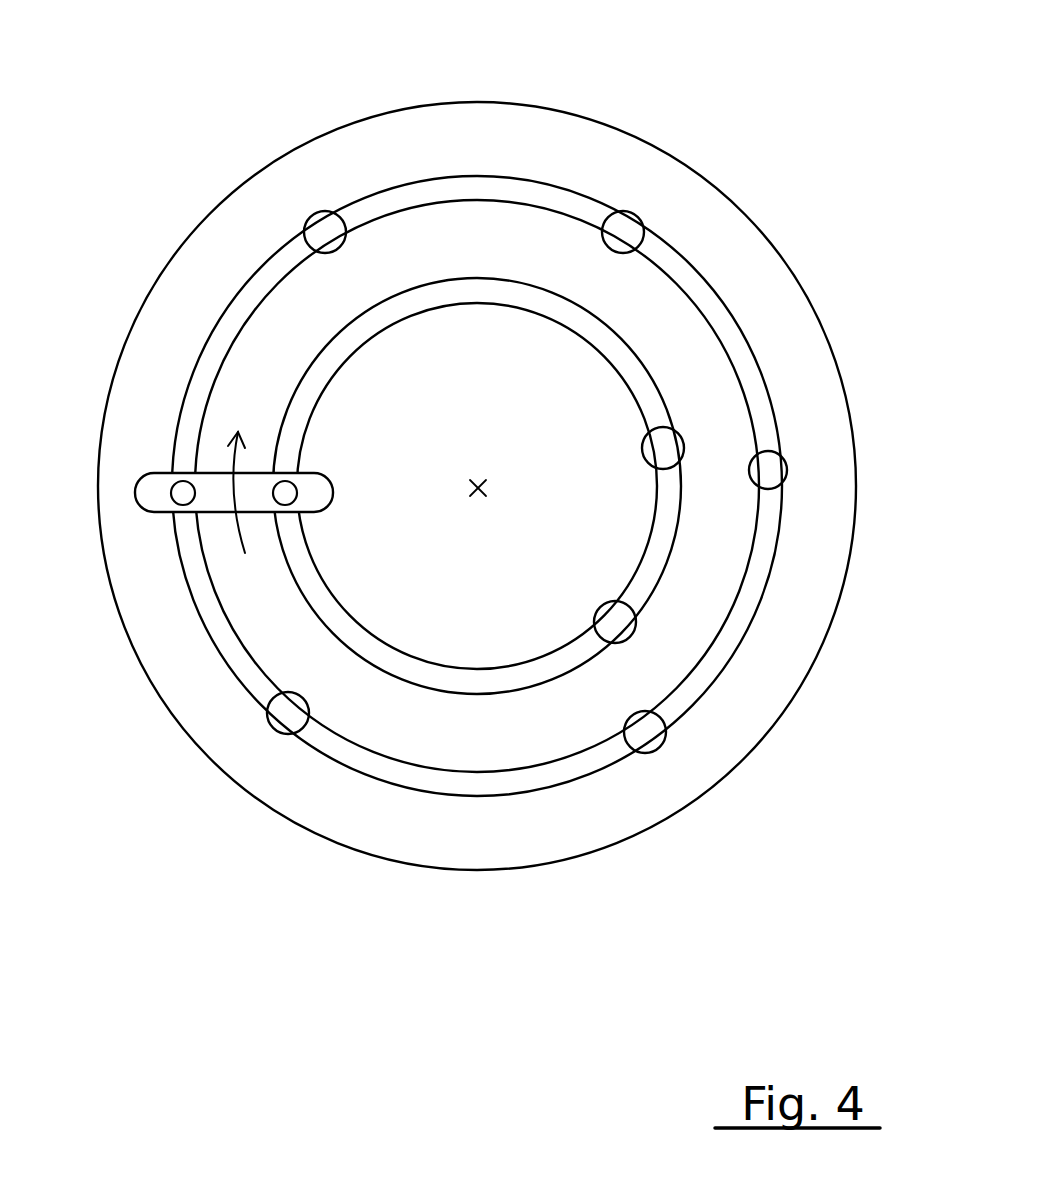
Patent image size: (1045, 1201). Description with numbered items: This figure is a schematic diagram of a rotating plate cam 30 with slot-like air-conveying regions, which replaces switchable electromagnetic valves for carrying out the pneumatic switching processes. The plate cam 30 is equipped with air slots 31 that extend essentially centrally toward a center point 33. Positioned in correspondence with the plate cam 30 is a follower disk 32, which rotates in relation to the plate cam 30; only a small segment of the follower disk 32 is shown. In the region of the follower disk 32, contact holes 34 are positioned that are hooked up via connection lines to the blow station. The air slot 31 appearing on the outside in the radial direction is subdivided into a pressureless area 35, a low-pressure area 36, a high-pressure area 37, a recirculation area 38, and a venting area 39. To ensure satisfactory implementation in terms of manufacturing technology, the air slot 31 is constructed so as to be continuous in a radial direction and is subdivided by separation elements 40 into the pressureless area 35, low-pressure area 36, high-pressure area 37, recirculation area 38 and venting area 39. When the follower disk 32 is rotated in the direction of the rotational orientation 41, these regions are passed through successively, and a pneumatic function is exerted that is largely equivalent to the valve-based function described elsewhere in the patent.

The plate cam 30 is at (583, 157).
The air slot 31 is at (722, 305).
The follower disk 32 is at (152, 502).
The center point 33 is at (478, 490).
The contact hole 34 is at (180, 495).
The pressureless area 35 is at (248, 298).
The low-pressure area 36 is at (479, 196).
The high-pressure area 37 is at (658, 255).
The recirculation area 38 is at (718, 648).
The venting area 39 is at (407, 777).
The separation element 40 is at (325, 230).
The rotational orientation 41 is at (236, 535).